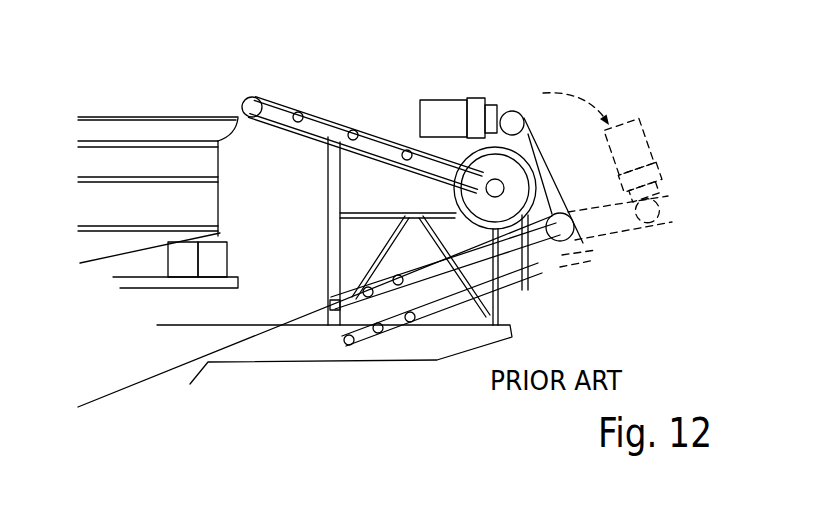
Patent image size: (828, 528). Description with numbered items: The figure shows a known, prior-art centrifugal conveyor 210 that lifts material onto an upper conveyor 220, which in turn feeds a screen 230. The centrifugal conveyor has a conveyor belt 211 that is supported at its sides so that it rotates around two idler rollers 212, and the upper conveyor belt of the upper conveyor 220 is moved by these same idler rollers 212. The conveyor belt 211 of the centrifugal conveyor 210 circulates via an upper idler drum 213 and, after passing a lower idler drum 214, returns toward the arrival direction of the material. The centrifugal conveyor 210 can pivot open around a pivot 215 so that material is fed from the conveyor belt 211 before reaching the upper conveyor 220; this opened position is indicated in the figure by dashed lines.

The centrifugal conveyor 210 is at (568, 76).
The conveyor belt 211 is at (281, 326).
The idler rollers 212 is at (467, 162).
The upper idler drum 213 is at (513, 113).
The lower idler drum 214 is at (566, 234).
The pivot 215 is at (532, 285).
The upper conveyor 220 is at (371, 138).
The screen 230 is at (188, 122).